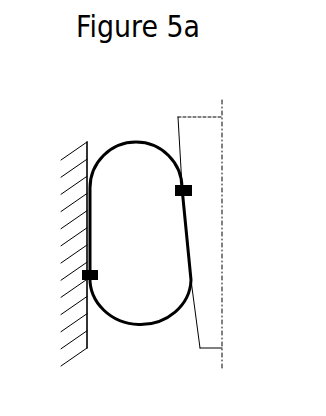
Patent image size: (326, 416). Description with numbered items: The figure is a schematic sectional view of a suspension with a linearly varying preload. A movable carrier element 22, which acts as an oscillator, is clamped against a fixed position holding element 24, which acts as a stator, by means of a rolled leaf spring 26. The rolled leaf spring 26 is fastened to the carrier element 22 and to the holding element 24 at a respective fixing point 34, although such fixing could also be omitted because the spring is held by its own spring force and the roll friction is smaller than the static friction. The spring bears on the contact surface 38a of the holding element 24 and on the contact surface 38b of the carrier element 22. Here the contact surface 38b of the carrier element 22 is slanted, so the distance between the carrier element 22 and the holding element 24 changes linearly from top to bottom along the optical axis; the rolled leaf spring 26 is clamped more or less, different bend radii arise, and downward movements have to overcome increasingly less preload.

The movable carrier element 22 is at (227, 224).
The fixed position holding element 24 is at (63, 230).
The rolled leaf spring 26 is at (135, 361).
The fixing point 34 is at (140, 233).
The contact surface 38a is at (144, 191).
The contact surface 38b is at (134, 278).